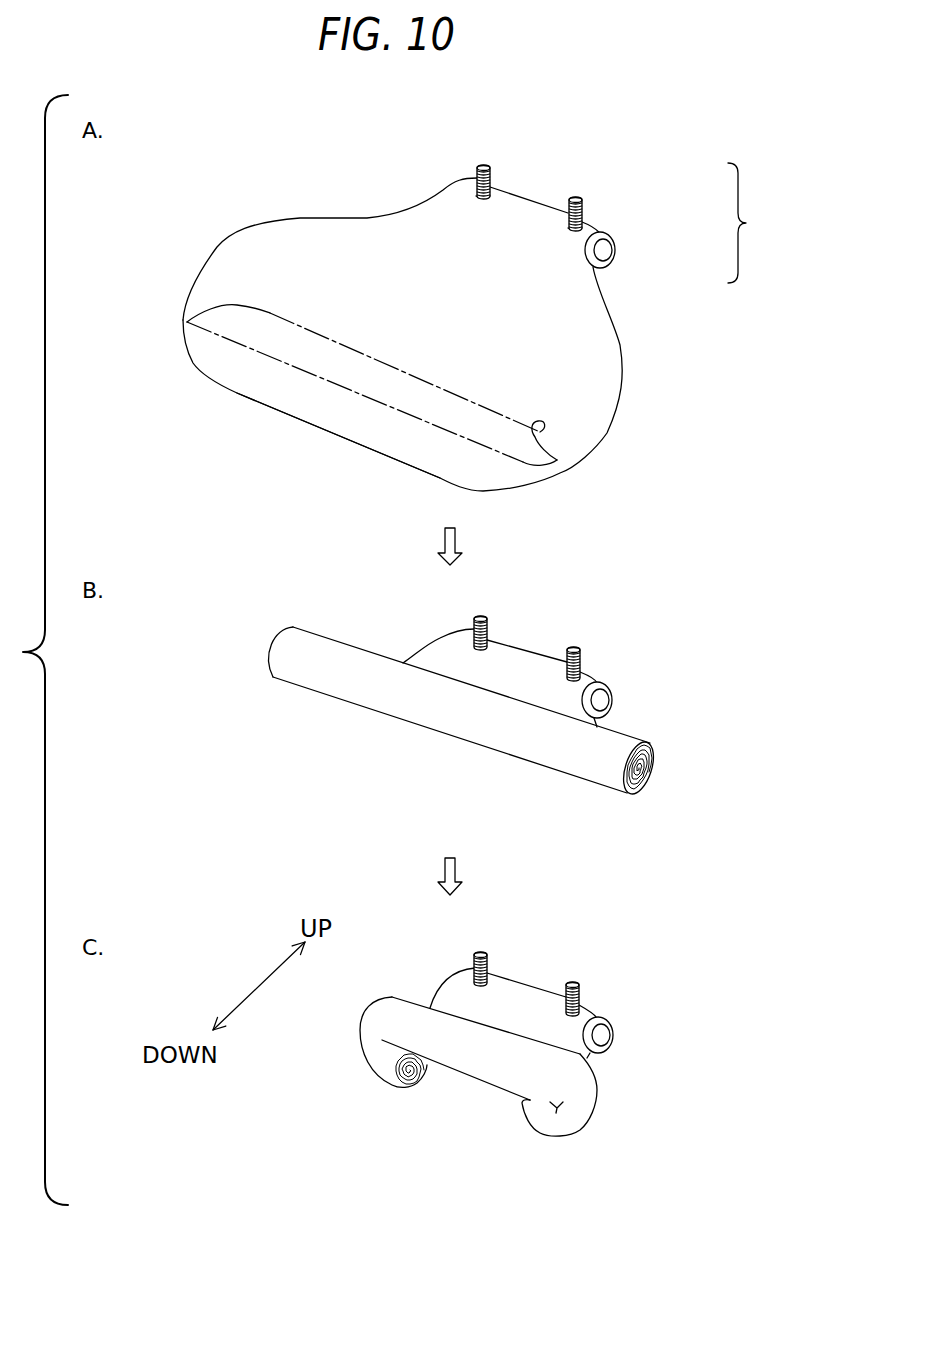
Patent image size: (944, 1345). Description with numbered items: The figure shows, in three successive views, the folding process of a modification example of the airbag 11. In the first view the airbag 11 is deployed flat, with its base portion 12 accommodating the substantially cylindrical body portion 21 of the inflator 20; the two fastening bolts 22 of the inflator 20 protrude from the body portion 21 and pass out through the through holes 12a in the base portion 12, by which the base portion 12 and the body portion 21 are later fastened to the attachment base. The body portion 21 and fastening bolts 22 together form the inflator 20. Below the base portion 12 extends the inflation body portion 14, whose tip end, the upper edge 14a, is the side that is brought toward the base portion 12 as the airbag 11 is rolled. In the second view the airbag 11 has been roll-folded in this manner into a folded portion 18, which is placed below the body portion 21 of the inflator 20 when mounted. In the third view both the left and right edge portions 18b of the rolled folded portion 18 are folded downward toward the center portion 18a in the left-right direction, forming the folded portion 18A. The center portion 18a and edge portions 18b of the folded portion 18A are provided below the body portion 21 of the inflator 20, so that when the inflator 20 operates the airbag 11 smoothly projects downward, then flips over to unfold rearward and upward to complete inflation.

The airbag 11 is at (250, 215).
The base portion 12 is at (527, 213).
The through holes 12a is at (570, 230).
The inflation body portion 14 is at (566, 450).
The upper edge 14a is at (338, 432).
The folded portion 18 is at (436, 722).
The center portion 18a is at (465, 722).
The edge portions 18b is at (290, 648).
The folded portion 18A is at (350, 1073).
The inflator 20 is at (752, 223).
The body portion 21 is at (606, 250).
The fastening bolt 22 is at (478, 167).